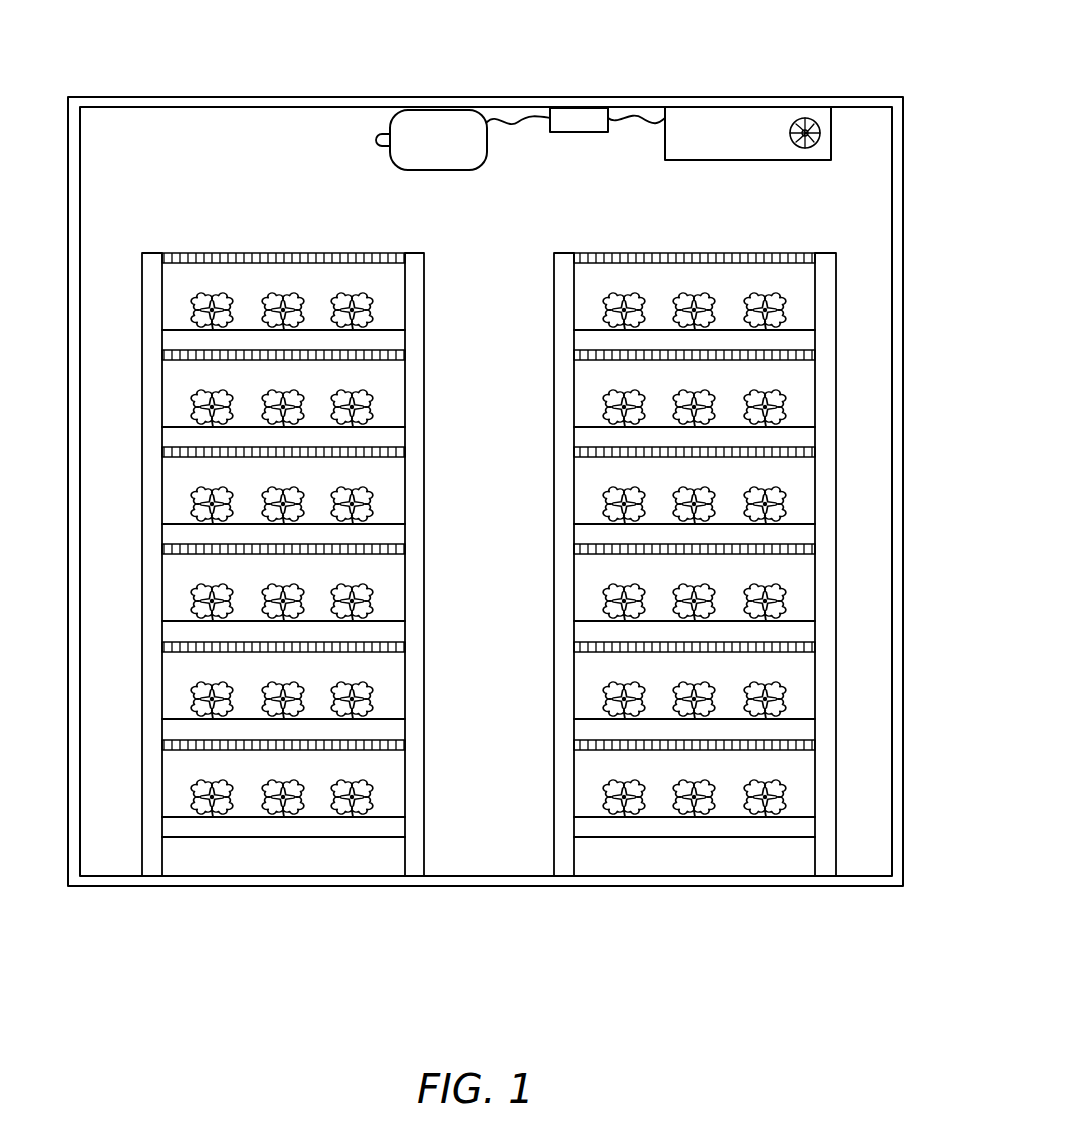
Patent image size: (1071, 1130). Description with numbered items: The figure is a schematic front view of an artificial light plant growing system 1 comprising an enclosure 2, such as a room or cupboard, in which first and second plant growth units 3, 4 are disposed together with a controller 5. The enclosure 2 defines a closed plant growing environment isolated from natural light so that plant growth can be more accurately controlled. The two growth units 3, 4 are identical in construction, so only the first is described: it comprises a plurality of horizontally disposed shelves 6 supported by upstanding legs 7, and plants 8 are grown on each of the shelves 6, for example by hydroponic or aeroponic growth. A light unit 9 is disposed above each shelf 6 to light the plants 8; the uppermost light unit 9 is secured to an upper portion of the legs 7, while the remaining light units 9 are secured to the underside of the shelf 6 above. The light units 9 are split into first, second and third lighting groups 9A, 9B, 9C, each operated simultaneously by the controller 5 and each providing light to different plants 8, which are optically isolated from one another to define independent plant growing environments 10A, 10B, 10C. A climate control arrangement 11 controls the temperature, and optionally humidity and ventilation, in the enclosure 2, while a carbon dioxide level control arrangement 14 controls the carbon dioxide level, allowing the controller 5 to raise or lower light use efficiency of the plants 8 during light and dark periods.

The artificial light plant growing system 1 is at (150, 80).
The enclosure 2 is at (903, 188).
The first plant growth unit 3 is at (140, 848).
The second plant growth unit 4 is at (552, 852).
The controller 5 is at (595, 112).
The shelves 6 is at (165, 437).
The upstanding legs 7 is at (418, 823).
The plants 8 is at (195, 801).
The light unit 9 is at (196, 254).
The first lighting group 9A is at (393, 353).
The second lighting group 9B is at (393, 548).
The third lighting group 9C is at (393, 746).
The independent plant growing environment 10A is at (175, 293).
The independent plant growing environment 10B is at (175, 495).
The independent plant growing environment 10C is at (175, 662).
The climate control arrangement 11 is at (758, 118).
The carbon dioxide level control arrangement 14 is at (425, 128).